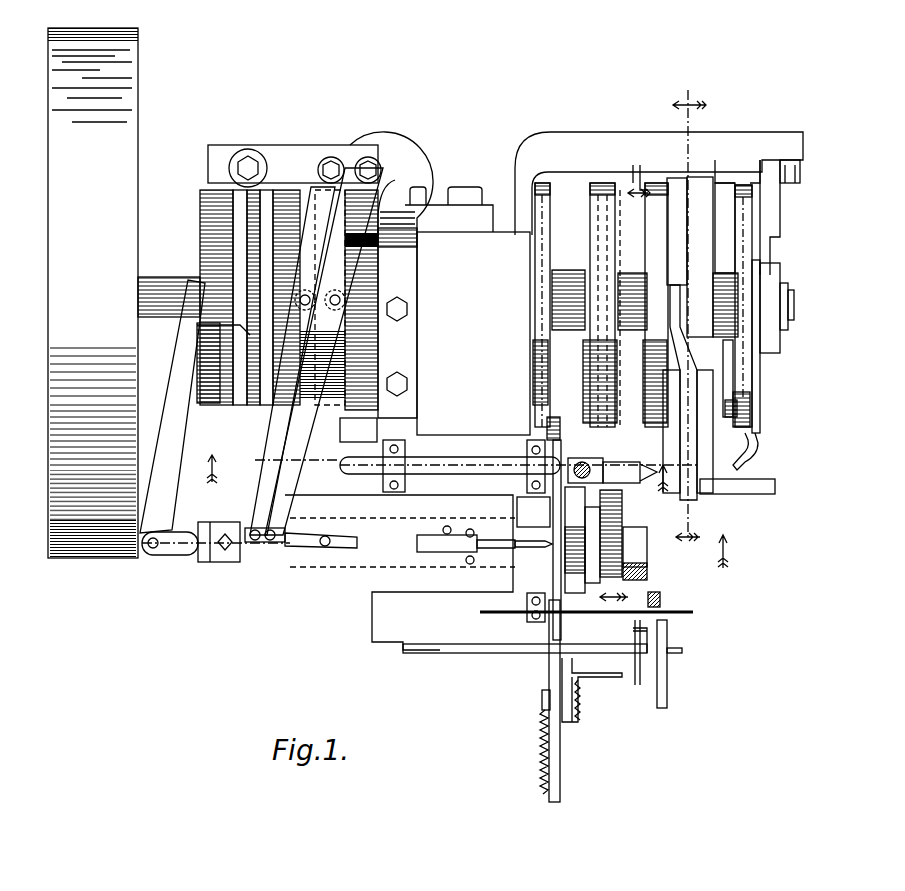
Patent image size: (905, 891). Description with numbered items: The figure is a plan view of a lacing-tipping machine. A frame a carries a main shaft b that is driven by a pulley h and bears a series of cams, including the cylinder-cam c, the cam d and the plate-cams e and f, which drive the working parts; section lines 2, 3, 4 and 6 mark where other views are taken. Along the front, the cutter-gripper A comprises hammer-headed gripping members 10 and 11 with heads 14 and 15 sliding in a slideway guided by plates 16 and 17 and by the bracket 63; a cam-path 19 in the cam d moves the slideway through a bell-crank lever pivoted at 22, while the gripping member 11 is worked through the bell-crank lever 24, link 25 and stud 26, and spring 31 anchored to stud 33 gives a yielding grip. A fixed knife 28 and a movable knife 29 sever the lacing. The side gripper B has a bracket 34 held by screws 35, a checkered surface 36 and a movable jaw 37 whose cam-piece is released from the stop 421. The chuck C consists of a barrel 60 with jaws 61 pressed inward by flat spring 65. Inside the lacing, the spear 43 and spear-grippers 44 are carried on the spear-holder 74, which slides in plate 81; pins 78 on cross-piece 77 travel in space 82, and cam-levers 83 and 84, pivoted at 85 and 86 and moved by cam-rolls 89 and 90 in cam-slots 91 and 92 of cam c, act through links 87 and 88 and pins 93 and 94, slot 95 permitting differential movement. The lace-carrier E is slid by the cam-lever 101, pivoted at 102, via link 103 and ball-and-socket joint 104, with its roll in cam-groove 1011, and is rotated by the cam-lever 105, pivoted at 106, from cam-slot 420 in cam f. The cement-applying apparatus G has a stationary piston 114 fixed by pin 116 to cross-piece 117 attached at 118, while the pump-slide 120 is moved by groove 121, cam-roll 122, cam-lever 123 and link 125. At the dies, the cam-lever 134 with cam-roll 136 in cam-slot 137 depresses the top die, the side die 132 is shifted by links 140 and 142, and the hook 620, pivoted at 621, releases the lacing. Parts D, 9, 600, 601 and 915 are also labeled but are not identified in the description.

The pulley h is at (130, 84).
The main shaft b is at (153, 274).
The cylinder-cam c is at (200, 208).
The frame a is at (467, 311).
The cam d is at (541, 180).
The plate-cam e is at (604, 185).
The plate-cam f is at (657, 198).
The cement-applying apparatus G is at (508, 470).
The carriage block D is at (455, 558).
The chuck C is at (640, 547).
The lace-carrier E is at (609, 630).
The side gripper B is at (662, 632).
The cutter-gripper A is at (552, 628).
The section line 2 is at (186, 548).
The section line 3 is at (692, 540).
The section line 4 is at (632, 292).
The section line 6 is at (428, 470).
The rod 9 is at (744, 190).
The gripping member 10 is at (552, 660).
The gripping member 11 is at (558, 560).
The head 14 is at (550, 618).
The head 15 is at (556, 590).
The plate 16 is at (533, 512).
The plate 17 is at (545, 466).
The cam-path 19 is at (548, 260).
The pivot 22 is at (550, 425).
The bell-crank lever 24 is at (586, 352).
The link 25 is at (575, 452).
The stud 26 is at (582, 468).
The fixed knife 28 is at (564, 616).
The movable knife 29 is at (548, 683).
The spring 31 is at (540, 754).
The stud 33 is at (540, 715).
The bracket 34 is at (620, 676).
The screws 35 is at (612, 742).
The checkered surface 36 is at (663, 603).
The movable jaw 37 is at (660, 590).
The spear 43 is at (505, 558).
The spear-grippers 44 is at (490, 535).
The barrel 60 is at (642, 545).
The chuck-jaws 61 is at (600, 596).
The bracket 63 is at (605, 516).
The flat spring 65 is at (592, 533).
The spear-holder 74 is at (416, 538).
The cross-piece 77 is at (446, 527).
The pins 78 is at (470, 528).
The plate 81 is at (315, 577).
The space 82 is at (357, 526).
The cam-lever 83 is at (337, 200).
The cam-lever 84 is at (368, 208).
The pivot 85 is at (333, 178).
The pivot 86 is at (372, 200).
The link 87 is at (276, 546).
The link 88 is at (308, 542).
The cam-roll 89 is at (298, 297).
The cam-roll 90 is at (345, 300).
The cam-slot 91 is at (300, 183).
The cam-slot 92 is at (358, 430).
The pin 93 is at (312, 460).
The pin 94 is at (327, 548).
The slot 95 is at (340, 546).
The cam-lever 101 is at (192, 390).
The pivot 102 is at (250, 163).
The link 103 is at (176, 526).
The ball-and-socket joint 104 is at (212, 552).
The cam-lever 105 is at (640, 232).
The pivot 106 is at (634, 183).
The piston 114 is at (450, 463).
The pin 116 is at (400, 464).
The cross-piece 117 is at (396, 446).
The attachment screws 118 is at (380, 500).
The slide 120 is at (320, 456).
The groove 121 is at (265, 300).
The cam-roll 122 is at (188, 402).
The cam-lever 123 is at (262, 424).
The link 125 is at (268, 432).
The side die member 132 is at (690, 500).
The cam-lever 134 is at (690, 376).
The cam-roll 136 is at (674, 303).
The cam-slot 137 is at (700, 236).
The link 140 is at (732, 380).
The second link 142 is at (728, 414).
The cam-slot 420 is at (572, 170).
The stop 421 is at (675, 656).
The pin 600 is at (627, 605).
The rod 601 is at (640, 672).
The hook 620 is at (746, 392).
The pivot 621 is at (770, 222).
The rod 915 is at (600, 185).
The cam-groove 1011 is at (240, 225).